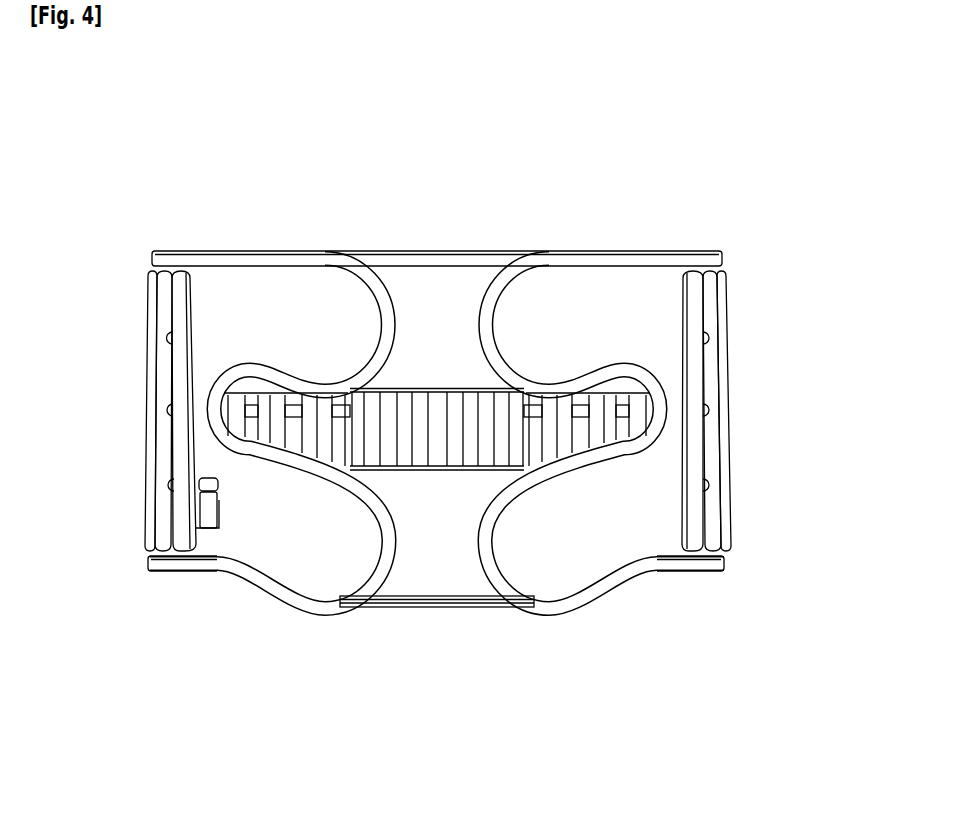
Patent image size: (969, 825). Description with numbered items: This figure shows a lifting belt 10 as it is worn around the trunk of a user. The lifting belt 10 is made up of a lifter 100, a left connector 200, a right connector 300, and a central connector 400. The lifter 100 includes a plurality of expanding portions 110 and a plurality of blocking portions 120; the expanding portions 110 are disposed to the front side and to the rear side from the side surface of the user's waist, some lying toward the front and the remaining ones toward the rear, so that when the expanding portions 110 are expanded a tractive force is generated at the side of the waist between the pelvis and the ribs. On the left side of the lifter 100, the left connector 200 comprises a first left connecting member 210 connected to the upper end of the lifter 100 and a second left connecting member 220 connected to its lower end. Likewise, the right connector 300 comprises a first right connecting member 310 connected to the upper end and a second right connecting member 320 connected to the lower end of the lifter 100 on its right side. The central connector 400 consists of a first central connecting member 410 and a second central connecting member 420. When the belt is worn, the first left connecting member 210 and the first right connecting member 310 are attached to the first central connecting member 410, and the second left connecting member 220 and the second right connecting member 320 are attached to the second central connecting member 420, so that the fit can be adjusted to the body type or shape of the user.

The lifting belt 10 is at (453, 88).
The lifter 100 is at (268, 232).
The expanding portions 110 is at (150, 472).
The blocking portions 120 is at (175, 445).
The left connector 200 is at (810, 372).
The first left connecting member 210 is at (550, 328).
The second left connecting member 220 is at (555, 540).
The right connector 300 is at (297, 697).
The first right connecting member 310 is at (308, 328).
The second right connecting member 320 is at (320, 530).
The central connector 400 is at (522, 733).
The first central connecting member 410 is at (433, 353).
The second central connecting member 420 is at (465, 540).